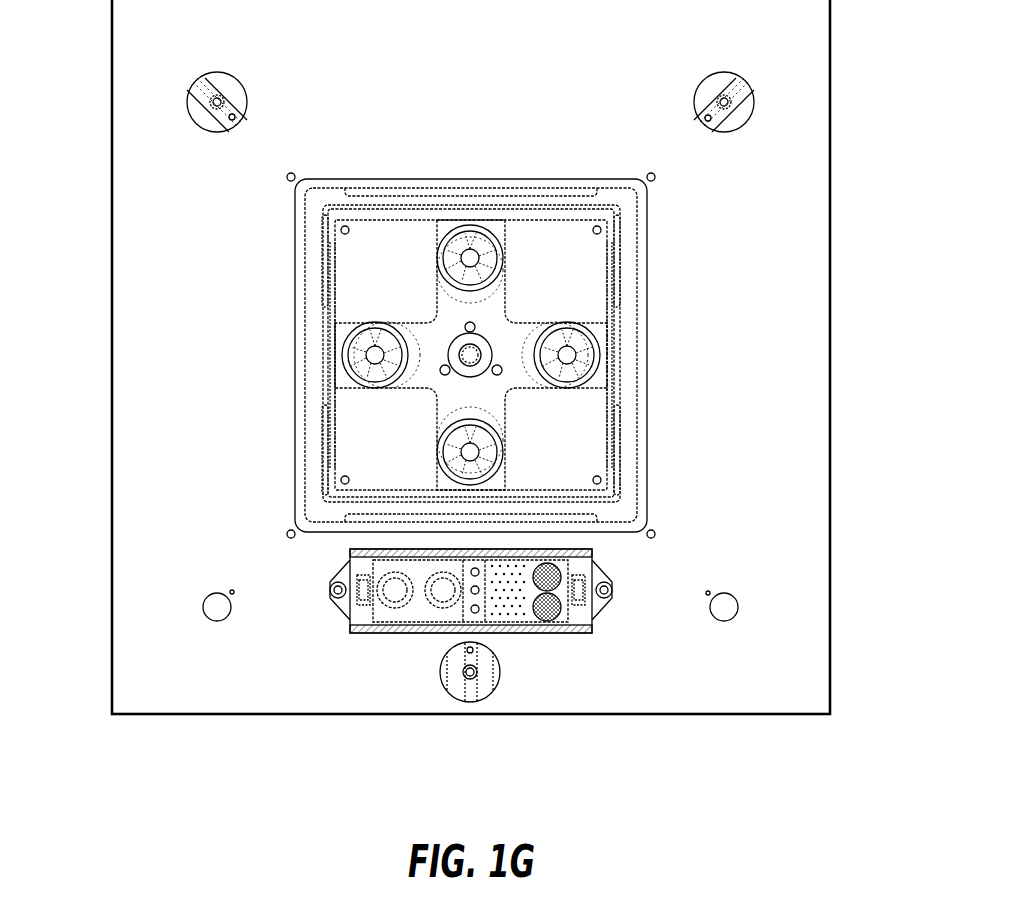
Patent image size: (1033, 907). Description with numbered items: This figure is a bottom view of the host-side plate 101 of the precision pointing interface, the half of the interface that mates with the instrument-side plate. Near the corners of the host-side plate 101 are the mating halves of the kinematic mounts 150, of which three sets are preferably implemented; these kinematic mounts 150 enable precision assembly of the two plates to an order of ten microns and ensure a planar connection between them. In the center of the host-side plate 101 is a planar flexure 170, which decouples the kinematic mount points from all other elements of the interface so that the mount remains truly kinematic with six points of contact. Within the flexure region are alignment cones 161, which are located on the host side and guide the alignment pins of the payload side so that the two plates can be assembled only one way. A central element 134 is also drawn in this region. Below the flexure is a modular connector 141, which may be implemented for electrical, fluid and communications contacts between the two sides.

The host-side plate 101 is at (775, 185).
The kinematic mounts 150 is at (190, 102).
The planar flexure 170 is at (622, 480).
The alignment cones 161 is at (350, 357).
The central hub 134 is at (477, 356).
The modular connector 141 is at (475, 600).